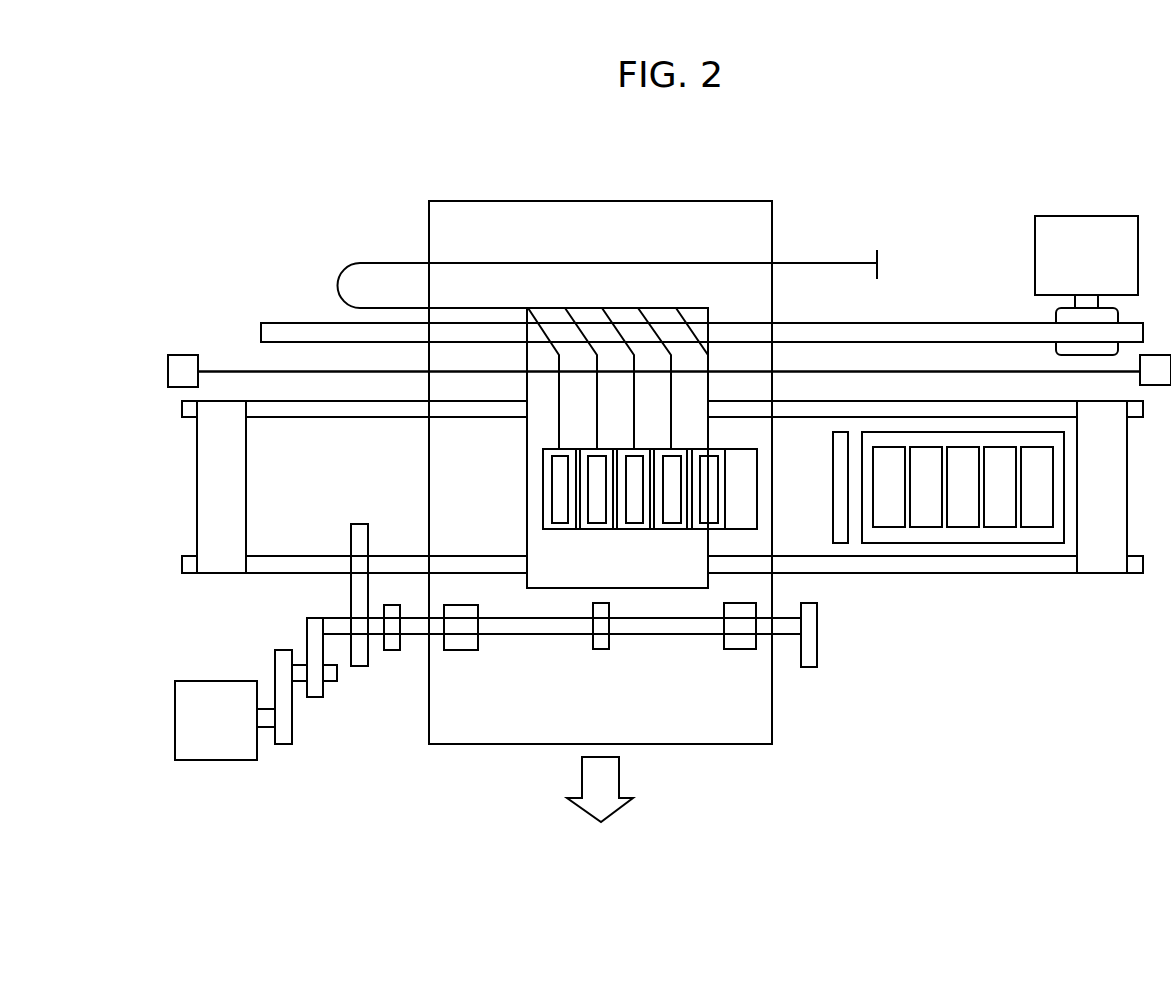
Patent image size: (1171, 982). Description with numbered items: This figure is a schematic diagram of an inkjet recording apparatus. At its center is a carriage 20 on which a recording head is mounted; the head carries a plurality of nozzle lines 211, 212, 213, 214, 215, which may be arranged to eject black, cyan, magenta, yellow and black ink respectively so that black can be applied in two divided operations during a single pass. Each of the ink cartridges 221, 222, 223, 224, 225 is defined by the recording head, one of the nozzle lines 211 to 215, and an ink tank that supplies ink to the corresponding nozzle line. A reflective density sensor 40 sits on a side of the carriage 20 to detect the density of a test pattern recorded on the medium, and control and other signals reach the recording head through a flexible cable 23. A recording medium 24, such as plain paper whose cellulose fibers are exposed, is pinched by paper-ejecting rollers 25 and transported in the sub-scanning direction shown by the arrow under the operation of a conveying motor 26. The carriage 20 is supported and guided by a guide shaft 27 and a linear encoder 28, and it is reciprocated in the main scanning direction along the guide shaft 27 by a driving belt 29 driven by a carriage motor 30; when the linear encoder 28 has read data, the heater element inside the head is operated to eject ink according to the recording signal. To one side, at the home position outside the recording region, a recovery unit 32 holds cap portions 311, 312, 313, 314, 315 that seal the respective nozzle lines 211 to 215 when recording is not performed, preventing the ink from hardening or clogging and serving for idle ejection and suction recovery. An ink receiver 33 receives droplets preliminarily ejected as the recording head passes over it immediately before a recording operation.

The carriage 20 is at (528, 538).
The flexible cable 23 is at (387, 262).
The recording medium 24 is at (678, 208).
The paper-ejecting rollers 25 is at (490, 634).
The conveying motor 26 is at (215, 751).
The guide shaft 27 is at (305, 410).
The linear encoder 28 is at (362, 373).
The driving belt 29 is at (303, 332).
The carriage motor 30 is at (1090, 225).
The ink tank holder 32 is at (1013, 433).
The ink receiver 33 is at (840, 535).
The density sensor 40 is at (757, 520).
The nozzle line 211 is at (550, 529).
The nozzle line 212 is at (583, 529).
The nozzle line 213 is at (636, 529).
The nozzle line 214 is at (667, 529).
The nozzle line 215 is at (703, 529).
The ink cartridge 221 is at (555, 457).
The ink cartridge 222 is at (594, 486).
The ink cartridge 223 is at (630, 509).
The ink cartridge 224 is at (675, 465).
The ink cartridge 225 is at (713, 491).
The cap portion 311 is at (889, 528).
The cap portion 312 is at (926, 528).
The cap portion 313 is at (963, 528).
The cap portion 314 is at (1000, 528).
The cap portion 315 is at (1038, 528).